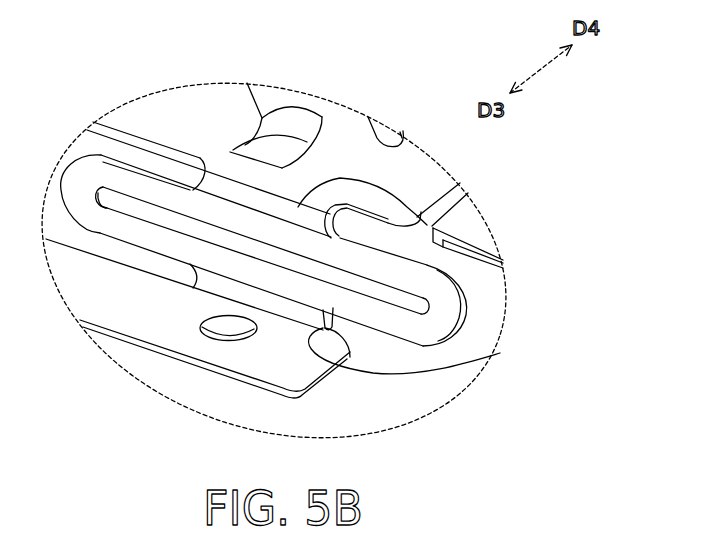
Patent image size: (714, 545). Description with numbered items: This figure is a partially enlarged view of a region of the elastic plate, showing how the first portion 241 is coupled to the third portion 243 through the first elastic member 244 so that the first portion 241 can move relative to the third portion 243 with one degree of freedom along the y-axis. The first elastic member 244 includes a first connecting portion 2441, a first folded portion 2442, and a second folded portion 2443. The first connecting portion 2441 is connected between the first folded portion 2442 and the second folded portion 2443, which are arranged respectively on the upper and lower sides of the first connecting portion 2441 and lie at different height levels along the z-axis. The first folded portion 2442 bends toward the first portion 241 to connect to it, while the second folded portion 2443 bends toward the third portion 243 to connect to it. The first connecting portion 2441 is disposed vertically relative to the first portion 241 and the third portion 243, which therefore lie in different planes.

The first portion 241 is at (175, 117).
The third portion 243 is at (118, 312).
The first elastic member 244 is at (360, 248).
The first connecting portion 2441 is at (445, 316).
The first folded portion 2442 is at (500, 258).
The second folded portion 2443 is at (458, 341).